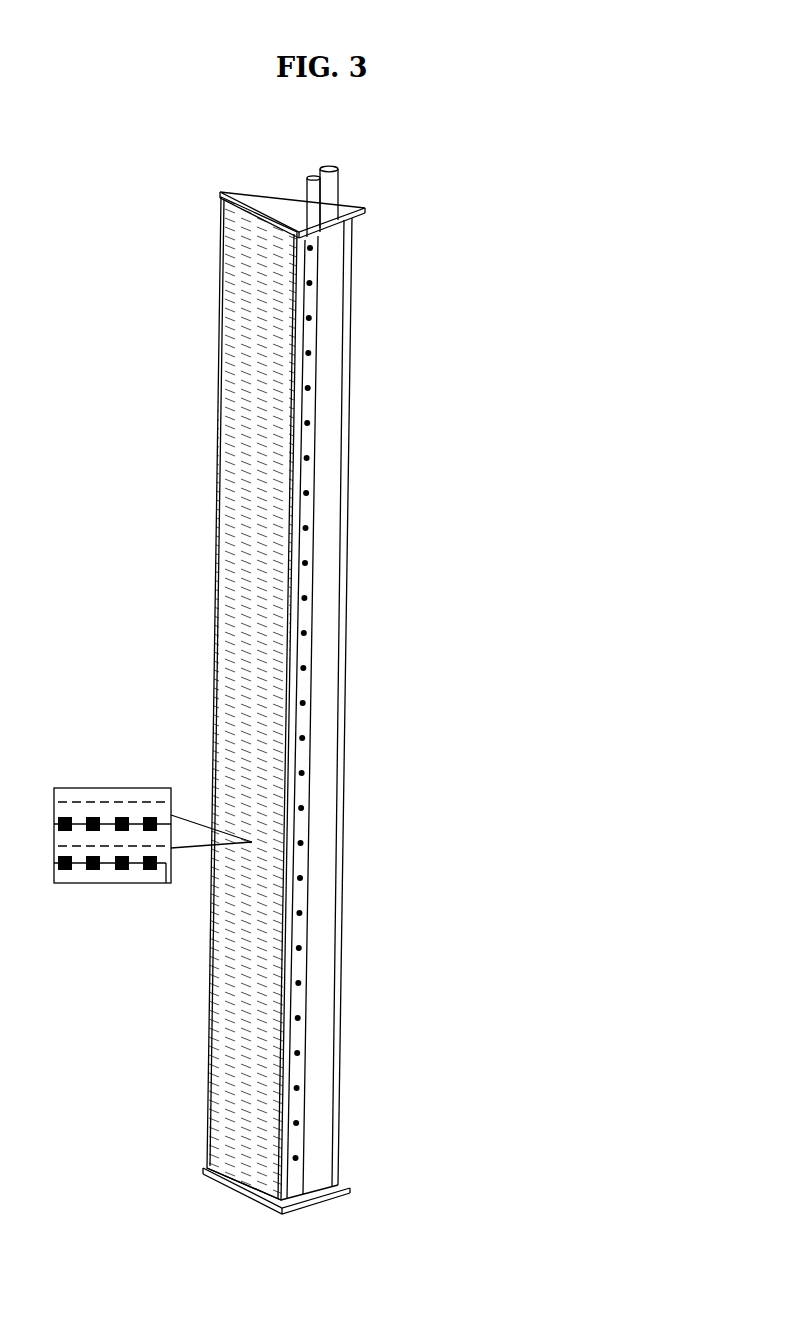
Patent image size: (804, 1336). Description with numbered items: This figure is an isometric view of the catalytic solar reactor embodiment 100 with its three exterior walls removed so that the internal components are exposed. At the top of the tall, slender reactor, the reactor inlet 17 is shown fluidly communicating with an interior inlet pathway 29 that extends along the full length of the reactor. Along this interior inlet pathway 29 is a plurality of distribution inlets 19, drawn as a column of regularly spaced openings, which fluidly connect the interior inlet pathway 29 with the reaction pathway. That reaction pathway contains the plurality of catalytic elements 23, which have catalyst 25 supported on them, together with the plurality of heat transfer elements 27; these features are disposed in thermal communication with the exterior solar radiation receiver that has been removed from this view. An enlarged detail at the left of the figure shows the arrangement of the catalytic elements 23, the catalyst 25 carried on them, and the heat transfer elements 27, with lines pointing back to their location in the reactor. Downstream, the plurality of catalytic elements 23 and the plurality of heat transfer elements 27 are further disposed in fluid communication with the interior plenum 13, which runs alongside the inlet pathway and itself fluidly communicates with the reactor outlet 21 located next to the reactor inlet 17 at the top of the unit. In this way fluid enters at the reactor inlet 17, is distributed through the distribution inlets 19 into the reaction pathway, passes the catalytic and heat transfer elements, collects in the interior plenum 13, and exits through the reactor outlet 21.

The catalytic solar reactor embodiment 100 is at (470, 184).
The interior plenum 13 is at (326, 571).
The reactor inlet 17 is at (310, 176).
The reactor outlet 21 is at (333, 167).
The distribution inlets 19 is at (308, 387).
The interior inlet pathway 29 is at (312, 302).
The catalytic elements 23 is at (166, 868).
The catalyst 25 is at (92, 870).
The heat transfer elements 27 is at (150, 801).